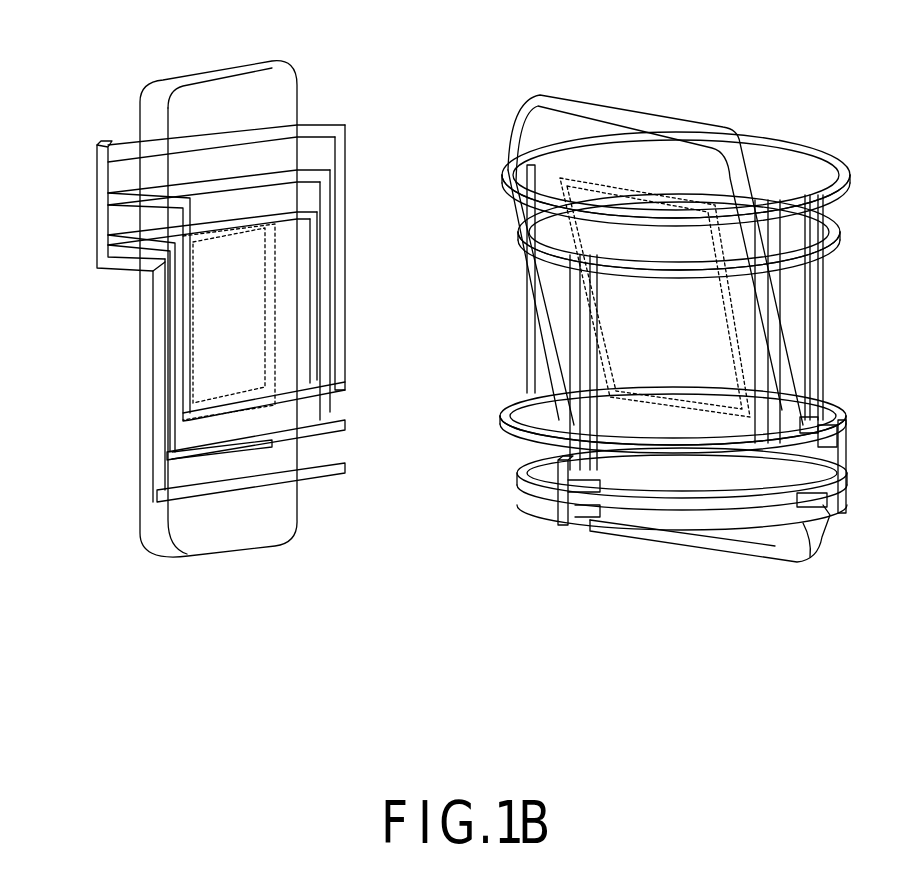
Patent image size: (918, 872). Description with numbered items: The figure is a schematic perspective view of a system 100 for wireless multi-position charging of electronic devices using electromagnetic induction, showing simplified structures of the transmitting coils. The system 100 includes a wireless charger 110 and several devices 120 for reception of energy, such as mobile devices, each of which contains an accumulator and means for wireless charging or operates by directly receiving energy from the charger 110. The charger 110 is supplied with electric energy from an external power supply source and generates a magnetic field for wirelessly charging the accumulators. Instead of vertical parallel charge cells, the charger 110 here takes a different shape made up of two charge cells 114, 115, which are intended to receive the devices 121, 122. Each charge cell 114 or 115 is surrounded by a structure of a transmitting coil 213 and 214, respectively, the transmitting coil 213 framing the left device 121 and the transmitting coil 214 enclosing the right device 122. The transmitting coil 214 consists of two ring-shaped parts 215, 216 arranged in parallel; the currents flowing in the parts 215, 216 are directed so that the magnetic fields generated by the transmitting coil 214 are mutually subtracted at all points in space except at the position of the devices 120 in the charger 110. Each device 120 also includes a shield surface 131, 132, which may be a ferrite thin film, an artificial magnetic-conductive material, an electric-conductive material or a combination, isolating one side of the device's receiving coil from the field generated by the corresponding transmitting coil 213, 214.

The system 100 is at (682, 57).
The wireless charger 110 is at (490, 578).
The charge cell 114 is at (305, 515).
The charge cell 115 is at (545, 515).
The devices for reception of energy 120 is at (470, 63).
The device for reception of energy 121 is at (294, 96).
The device for reception of energy 122 is at (520, 120).
The shield surface 131 is at (183, 467).
The shield surface 132 is at (743, 360).
The structure of the transmitting coil 213 is at (102, 210).
The structure of the transmitting coil 214 is at (430, 172).
The ring-shaped part 215 is at (517, 176).
The ring-shaped part 216 is at (520, 232).